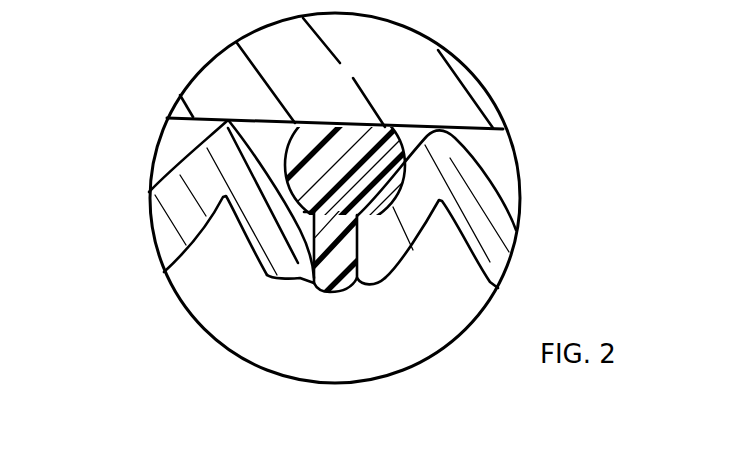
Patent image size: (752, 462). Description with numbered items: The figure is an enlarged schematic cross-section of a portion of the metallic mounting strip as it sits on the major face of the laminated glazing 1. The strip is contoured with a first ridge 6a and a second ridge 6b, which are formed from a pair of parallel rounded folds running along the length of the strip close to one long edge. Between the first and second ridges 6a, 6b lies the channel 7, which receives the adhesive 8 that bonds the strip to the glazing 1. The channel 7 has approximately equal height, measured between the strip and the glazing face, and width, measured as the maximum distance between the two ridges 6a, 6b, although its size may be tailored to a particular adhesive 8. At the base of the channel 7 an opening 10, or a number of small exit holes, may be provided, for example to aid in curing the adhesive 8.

The laminated glazing 1 is at (432, 71).
The channel 7 is at (278, 144).
The first ridge 6a is at (436, 206).
The second ridge 6b is at (223, 200).
The adhesive 8 is at (370, 153).
The opening 10 is at (312, 278).